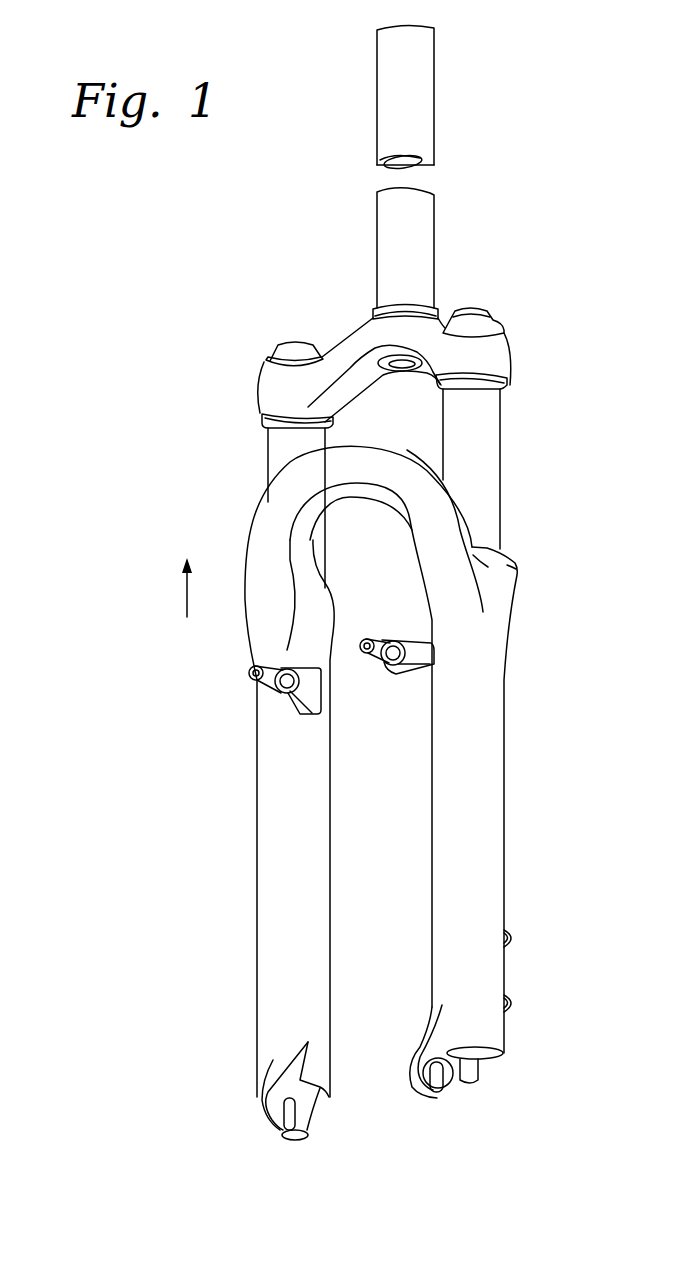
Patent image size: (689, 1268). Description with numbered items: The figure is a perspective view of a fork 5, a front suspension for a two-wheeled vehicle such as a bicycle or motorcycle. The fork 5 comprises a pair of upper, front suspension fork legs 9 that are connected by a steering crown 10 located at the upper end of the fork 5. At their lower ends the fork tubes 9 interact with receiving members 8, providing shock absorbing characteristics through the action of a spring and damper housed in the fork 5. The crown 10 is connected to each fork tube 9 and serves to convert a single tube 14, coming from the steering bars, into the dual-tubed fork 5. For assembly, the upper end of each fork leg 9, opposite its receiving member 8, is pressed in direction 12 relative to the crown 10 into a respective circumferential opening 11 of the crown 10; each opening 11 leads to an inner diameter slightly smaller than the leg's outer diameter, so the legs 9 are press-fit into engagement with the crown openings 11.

The fork 5 is at (122, 315).
The receiving member 8 is at (264, 827).
The upper front suspension fork leg 9 is at (272, 481).
The steering crown 10 is at (500, 352).
The circumferential opening 11 is at (475, 383).
The direction 12 is at (186, 596).
The single tube 14 is at (436, 232).